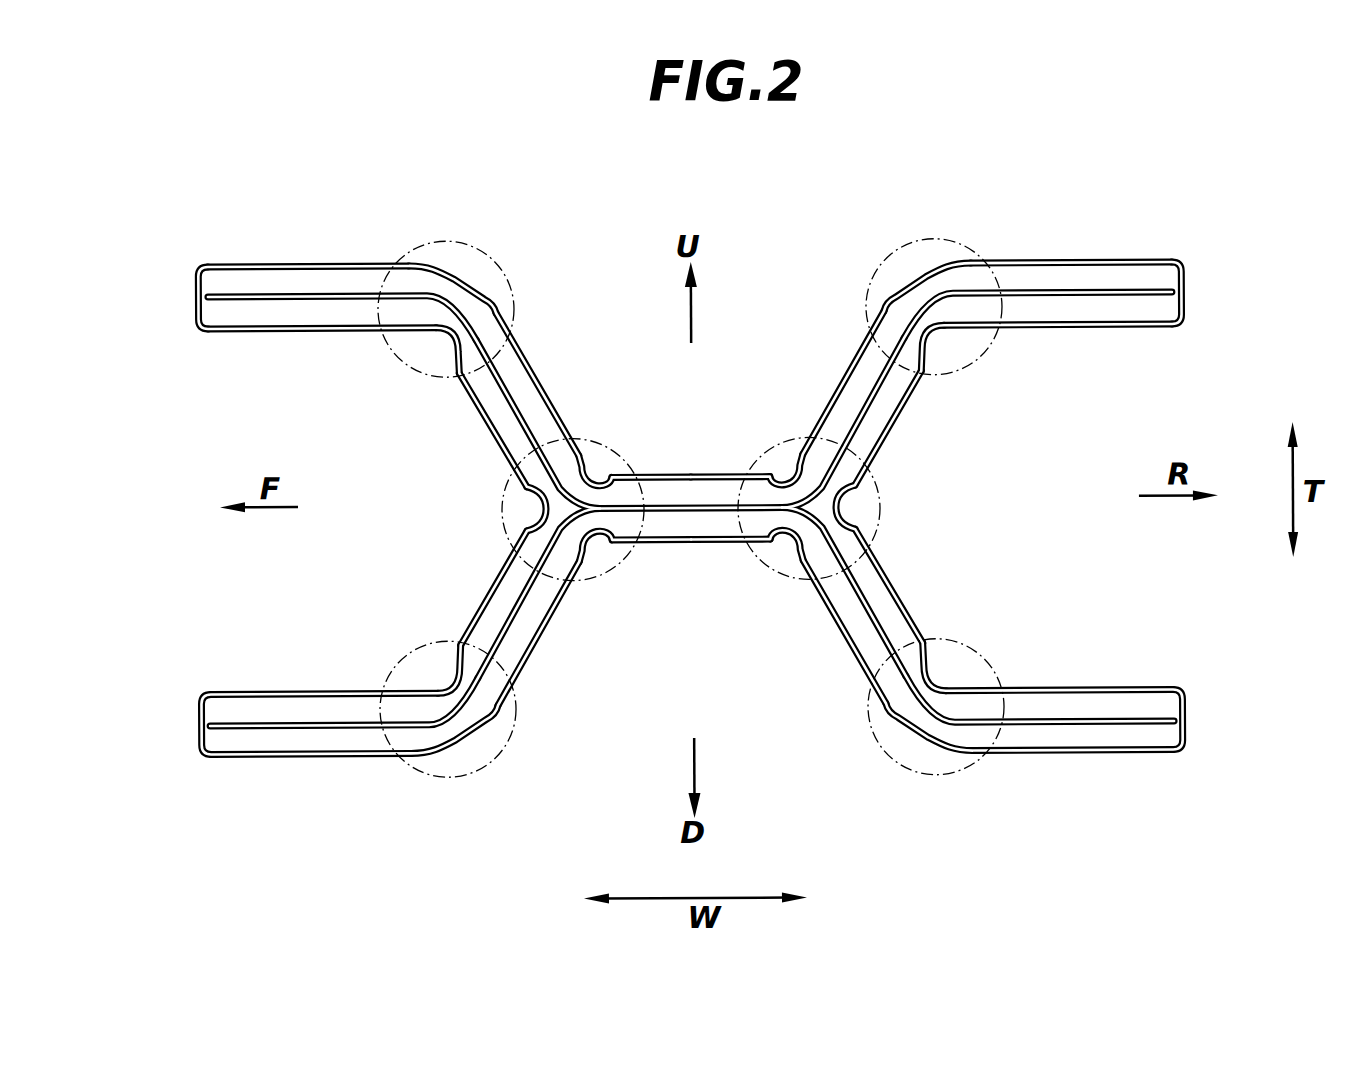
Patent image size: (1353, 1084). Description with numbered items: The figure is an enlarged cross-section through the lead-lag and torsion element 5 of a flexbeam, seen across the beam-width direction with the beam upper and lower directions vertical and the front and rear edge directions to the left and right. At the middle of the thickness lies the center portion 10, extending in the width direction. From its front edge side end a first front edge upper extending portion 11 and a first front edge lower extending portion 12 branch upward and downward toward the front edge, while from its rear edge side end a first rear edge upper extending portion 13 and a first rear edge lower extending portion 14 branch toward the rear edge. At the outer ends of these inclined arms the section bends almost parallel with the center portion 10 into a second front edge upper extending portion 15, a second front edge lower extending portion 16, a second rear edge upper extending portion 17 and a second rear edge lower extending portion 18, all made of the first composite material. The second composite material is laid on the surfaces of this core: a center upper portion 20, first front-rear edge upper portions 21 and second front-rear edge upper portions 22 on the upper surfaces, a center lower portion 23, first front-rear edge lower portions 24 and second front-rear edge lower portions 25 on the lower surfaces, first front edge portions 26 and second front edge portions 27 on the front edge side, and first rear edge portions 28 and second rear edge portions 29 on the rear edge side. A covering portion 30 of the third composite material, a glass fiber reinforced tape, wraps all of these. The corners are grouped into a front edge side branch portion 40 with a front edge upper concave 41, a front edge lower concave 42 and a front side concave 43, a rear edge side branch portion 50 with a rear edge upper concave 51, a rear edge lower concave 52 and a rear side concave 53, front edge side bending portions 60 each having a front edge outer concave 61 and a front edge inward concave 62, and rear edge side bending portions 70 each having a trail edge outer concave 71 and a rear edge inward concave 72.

The lead-lag and torsion element 5 is at (150, 213).
The center portion 10 is at (712, 513).
The first front edge upper extending portion 11 is at (508, 398).
The first front edge lower extending portion 12 is at (508, 594).
The first rear edge upper extending portion 13 is at (878, 396).
The first rear edge lower extending portion 14 is at (876, 596).
The second front edge upper extending portion 15 is at (257, 302).
The second front edge lower extending portion 16 is at (244, 720).
The second rear edge upper extending portion 17 is at (1125, 296).
The second rear edge lower extending portion 18 is at (1130, 720).
The center upper portion 20 is at (697, 476).
The first front-rear edge upper portion 21 is at (518, 372).
The second front-rear edge upper portion 22 is at (312, 268).
The center lower portion 23 is at (680, 545).
The first front-rear edge lower portion 24 is at (520, 645).
The second front-rear edge lower portion 25 is at (308, 757).
The first front edge portion 26 is at (512, 440).
The second front edge portion 27 is at (300, 331).
The first rear edge portion 28 is at (870, 440).
The second rear edge portion 29 is at (1082, 328).
The covering portion 30 is at (201, 261).
The front edge side branch portion 40 is at (588, 438).
The front edge upper concave 41 is at (596, 468).
The front edge lower concave 42 is at (592, 553).
The front side concave 43 is at (538, 508).
The rear edge side branch portion 50 is at (794, 438).
The rear edge upper concave 51 is at (786, 468).
The rear edge lower concave 52 is at (790, 553).
The rear side concave 53 is at (845, 508).
The front edge side bending portion 60 is at (441, 241).
The front edge outer concave 61 is at (478, 284).
The front edge inward concave 62 is at (440, 340).
The rear edge side bending portion 70 is at (938, 241).
The trail edge outer concave 71 is at (904, 284).
The rear edge inward concave 72 is at (944, 338).